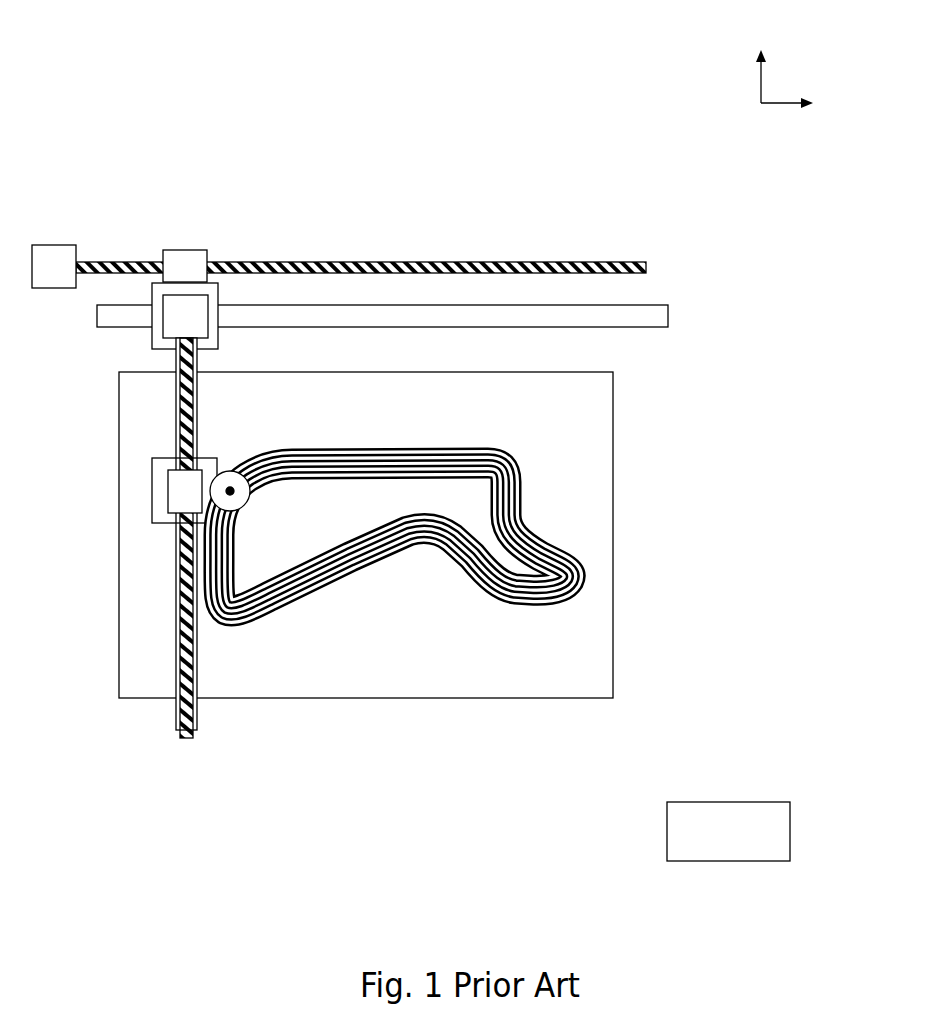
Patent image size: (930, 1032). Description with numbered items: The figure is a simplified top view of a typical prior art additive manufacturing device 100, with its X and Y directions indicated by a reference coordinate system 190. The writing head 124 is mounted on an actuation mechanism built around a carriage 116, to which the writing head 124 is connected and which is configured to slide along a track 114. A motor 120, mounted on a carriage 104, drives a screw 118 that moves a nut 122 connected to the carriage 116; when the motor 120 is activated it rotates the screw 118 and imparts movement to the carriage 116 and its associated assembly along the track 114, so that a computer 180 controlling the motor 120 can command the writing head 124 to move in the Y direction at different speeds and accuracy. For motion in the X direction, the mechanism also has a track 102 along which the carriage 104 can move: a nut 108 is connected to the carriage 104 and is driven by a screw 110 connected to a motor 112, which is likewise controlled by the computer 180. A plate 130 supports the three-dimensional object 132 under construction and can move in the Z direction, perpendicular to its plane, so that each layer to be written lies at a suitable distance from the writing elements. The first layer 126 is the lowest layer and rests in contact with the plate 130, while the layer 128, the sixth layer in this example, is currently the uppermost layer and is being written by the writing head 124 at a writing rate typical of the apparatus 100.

The additive manufacturing device 100 is at (113, 111).
The track 102 is at (642, 316).
The carriage 104 is at (215, 295).
The nut 108 is at (183, 257).
The screw 110 is at (640, 260).
The motor 112 is at (58, 253).
The track 114 is at (173, 677).
The carriage 116 is at (152, 462).
The screw 118 is at (182, 562).
The motor 120 is at (177, 318).
The nut 122 is at (180, 490).
The writing head 124 is at (237, 477).
The first layer 126 is at (322, 565).
The layer 128 is at (265, 617).
The plate 130 is at (613, 410).
The 3D object 132 is at (517, 617).
The computer 180 is at (685, 828).
The reference coordinate system 190 is at (748, 100).